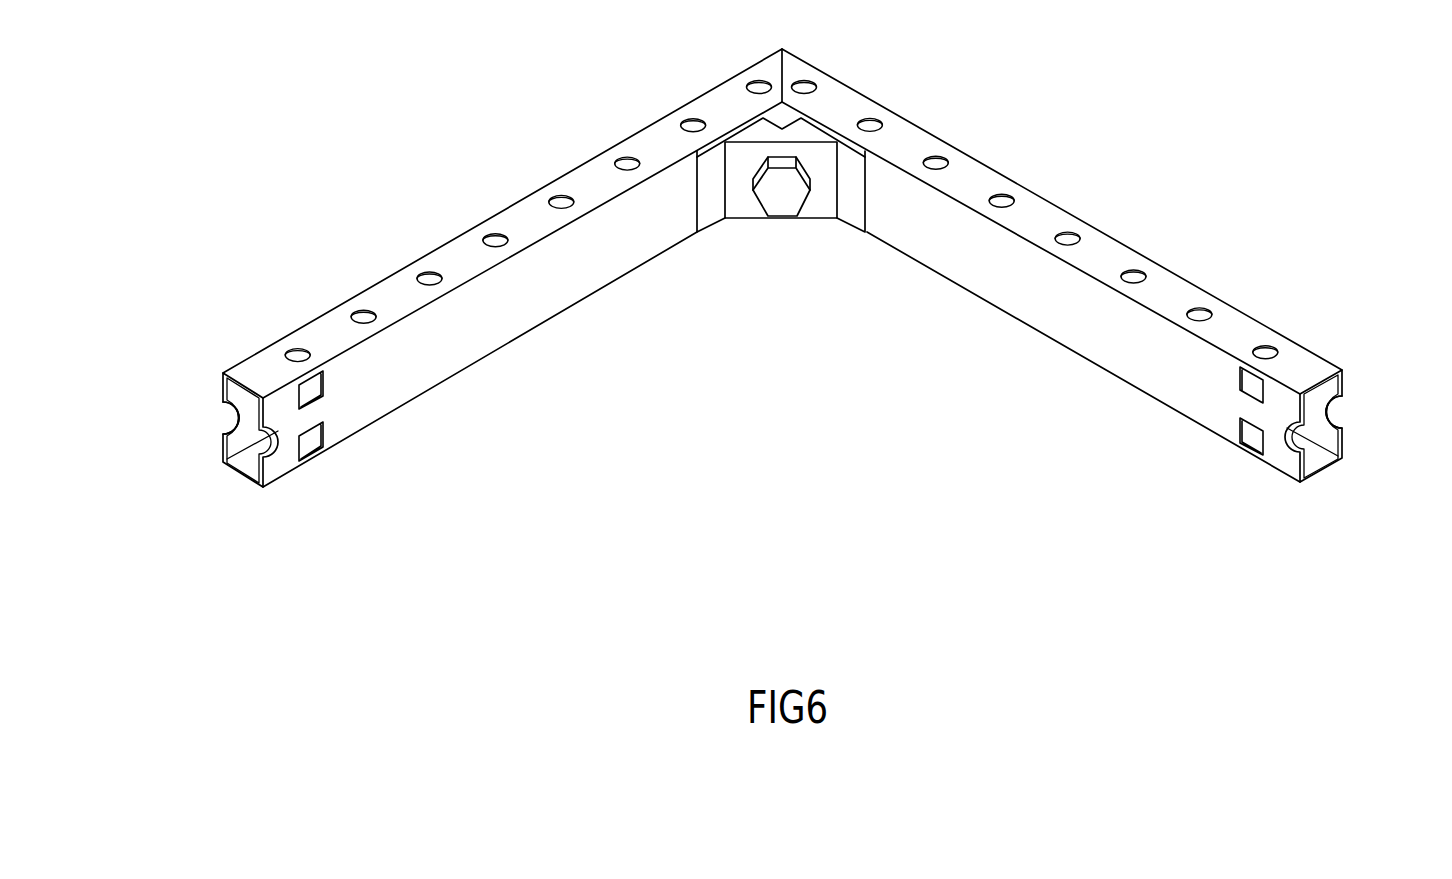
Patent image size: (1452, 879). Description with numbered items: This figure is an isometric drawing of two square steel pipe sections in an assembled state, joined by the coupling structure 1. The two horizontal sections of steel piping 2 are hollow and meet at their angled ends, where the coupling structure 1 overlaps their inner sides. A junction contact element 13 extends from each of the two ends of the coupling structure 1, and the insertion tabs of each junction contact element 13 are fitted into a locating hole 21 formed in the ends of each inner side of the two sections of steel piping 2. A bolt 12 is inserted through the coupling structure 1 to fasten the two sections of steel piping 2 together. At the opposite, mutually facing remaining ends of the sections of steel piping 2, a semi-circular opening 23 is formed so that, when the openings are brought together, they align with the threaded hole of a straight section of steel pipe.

The coupling structure 1 is at (776, 207).
The bolt 12 is at (786, 197).
The junction contact element 13 is at (715, 177).
The steel piping 2 is at (530, 215).
The locating hole 21 is at (315, 440).
The semi-circular opening 23 is at (225, 413).